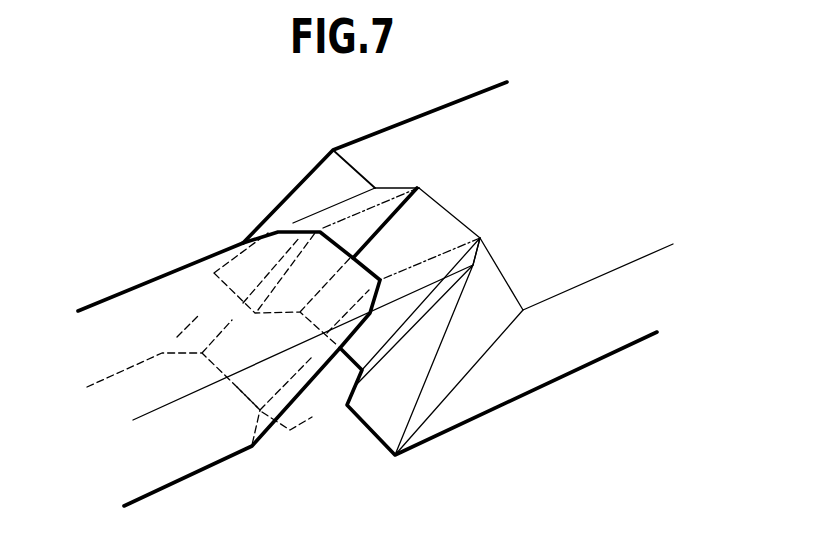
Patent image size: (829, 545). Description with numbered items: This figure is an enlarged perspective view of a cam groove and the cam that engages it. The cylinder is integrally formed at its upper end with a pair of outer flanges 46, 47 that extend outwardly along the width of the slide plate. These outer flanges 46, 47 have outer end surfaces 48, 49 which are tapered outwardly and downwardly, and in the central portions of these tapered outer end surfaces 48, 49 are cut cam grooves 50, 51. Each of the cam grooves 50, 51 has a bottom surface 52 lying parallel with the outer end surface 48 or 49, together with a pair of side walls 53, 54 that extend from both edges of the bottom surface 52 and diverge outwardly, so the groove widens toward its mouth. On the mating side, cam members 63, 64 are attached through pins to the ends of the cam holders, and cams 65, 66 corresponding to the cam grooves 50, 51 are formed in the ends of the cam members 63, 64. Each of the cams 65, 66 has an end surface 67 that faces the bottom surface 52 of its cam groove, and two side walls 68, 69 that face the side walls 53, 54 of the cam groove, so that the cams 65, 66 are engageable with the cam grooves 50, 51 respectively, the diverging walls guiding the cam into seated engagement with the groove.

The outer flange 46 is at (410, 120).
The outer flange 47 is at (375, 158).
The outer end surface 48 is at (346, 168).
The outer end surface 49 is at (382, 166).
The cam groove 50 is at (333, 188).
The cam groove 51 is at (447, 303).
The bottom surface 52 is at (441, 218).
The side wall 53 is at (410, 196).
The side wall 54 is at (474, 262).
The cam member 63 is at (145, 283).
The cam member 64 is at (209, 368).
The cam 65 is at (293, 224).
The cam 66 is at (311, 299).
The end surface 67 is at (237, 388).
The side wall 68 is at (177, 336).
The side wall 69 is at (290, 431).